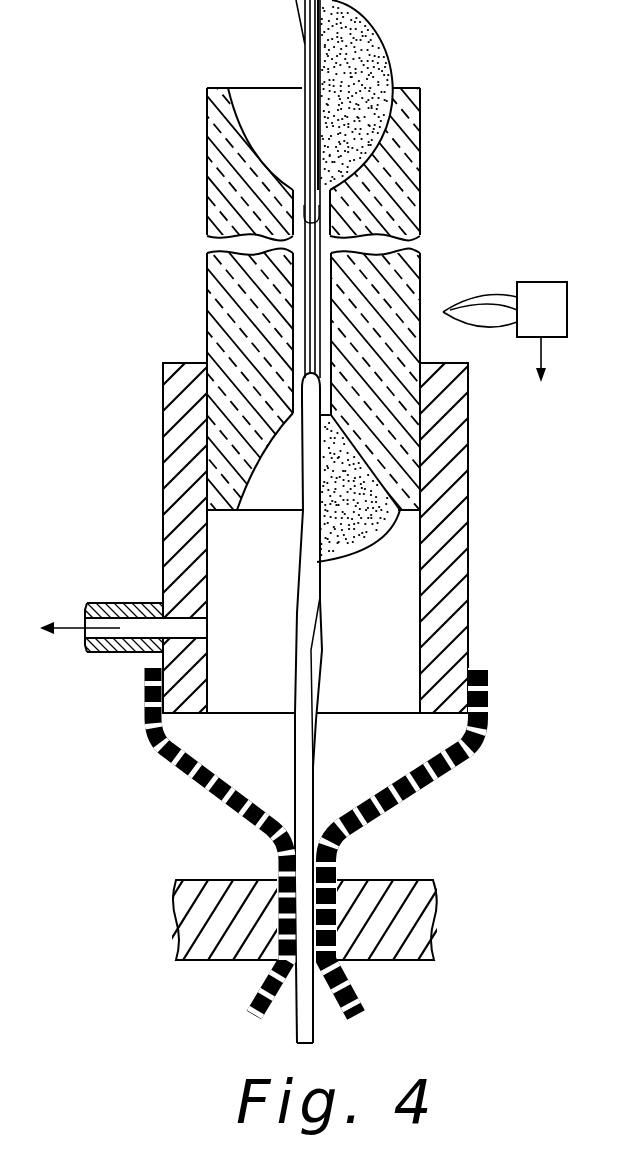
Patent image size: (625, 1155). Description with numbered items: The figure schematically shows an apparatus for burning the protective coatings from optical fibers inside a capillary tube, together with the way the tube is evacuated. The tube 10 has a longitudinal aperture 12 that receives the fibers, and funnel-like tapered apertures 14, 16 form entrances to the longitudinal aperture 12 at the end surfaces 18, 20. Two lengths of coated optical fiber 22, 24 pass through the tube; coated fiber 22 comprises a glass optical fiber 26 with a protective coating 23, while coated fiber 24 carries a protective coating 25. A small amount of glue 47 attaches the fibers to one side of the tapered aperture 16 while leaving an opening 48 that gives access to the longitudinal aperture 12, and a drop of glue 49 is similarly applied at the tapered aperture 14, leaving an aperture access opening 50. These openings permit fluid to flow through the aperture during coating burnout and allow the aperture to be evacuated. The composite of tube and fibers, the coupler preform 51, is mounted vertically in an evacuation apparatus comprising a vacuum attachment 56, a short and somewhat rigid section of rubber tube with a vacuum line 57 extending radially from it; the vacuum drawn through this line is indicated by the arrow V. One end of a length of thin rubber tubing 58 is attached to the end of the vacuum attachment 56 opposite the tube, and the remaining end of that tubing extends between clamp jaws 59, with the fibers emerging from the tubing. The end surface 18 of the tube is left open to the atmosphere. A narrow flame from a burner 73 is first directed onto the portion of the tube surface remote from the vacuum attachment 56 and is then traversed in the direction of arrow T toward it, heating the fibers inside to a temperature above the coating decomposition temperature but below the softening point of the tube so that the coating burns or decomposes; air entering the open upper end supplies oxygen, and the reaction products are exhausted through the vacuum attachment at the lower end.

The tube 10 is at (207, 163).
The longitudinal aperture 12 is at (293, 333).
The tapered aperture 14 is at (245, 118).
The tapered aperture 16 is at (272, 447).
The end surface 18 is at (222, 88).
The end surface 20 is at (225, 512).
The coated optical fiber 22 is at (286, 613).
The protective coating 23 is at (310, 721).
The coated optical fiber 24 is at (332, 648).
The protective coating 25 is at (317, 678).
The glass optical fiber 26 is at (320, 292).
The glue 47 is at (366, 540).
The opening 48 is at (284, 440).
The drop of glue 49 is at (363, 42).
The aperture access opening 50 is at (286, 170).
The coupler preform 51 is at (199, 317).
The vacuum attachment 56 is at (163, 405).
The vacuum line 57 is at (115, 603).
The thin rubber tubing 58 is at (416, 790).
The clamp jaws 59 is at (185, 920).
The burner 73 is at (537, 282).
The arrow T is at (537, 353).
The vacuum V is at (70, 632).